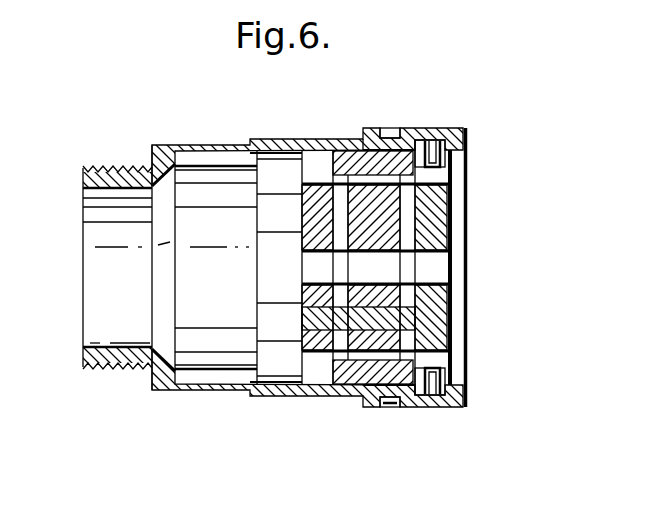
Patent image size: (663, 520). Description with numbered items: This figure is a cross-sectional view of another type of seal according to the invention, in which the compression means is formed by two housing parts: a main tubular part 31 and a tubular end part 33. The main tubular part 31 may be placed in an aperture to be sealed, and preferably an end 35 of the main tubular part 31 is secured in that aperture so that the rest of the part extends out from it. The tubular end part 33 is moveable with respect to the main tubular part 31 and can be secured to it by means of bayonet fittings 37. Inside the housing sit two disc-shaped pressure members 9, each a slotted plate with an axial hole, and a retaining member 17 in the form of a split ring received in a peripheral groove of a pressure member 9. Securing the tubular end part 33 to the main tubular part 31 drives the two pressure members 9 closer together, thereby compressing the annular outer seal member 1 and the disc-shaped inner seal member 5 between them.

The outer seal member 1 is at (352, 160).
The inner seal member 5 is at (370, 223).
The pressure member 9 is at (320, 228).
The retaining member 17 is at (428, 140).
The main tubular part 31 is at (227, 380).
The tubular end part 33 is at (410, 132).
The end of the main tubular part 35 is at (93, 235).
The bayonet fittings 37 is at (390, 408).